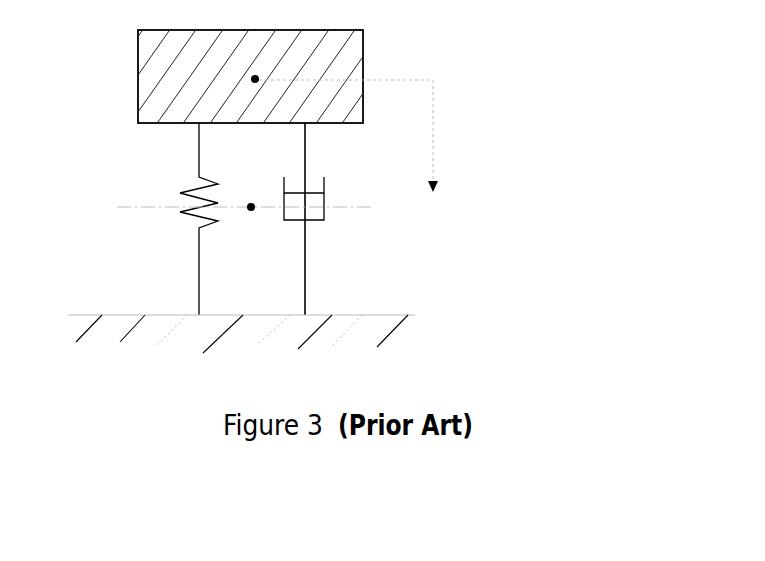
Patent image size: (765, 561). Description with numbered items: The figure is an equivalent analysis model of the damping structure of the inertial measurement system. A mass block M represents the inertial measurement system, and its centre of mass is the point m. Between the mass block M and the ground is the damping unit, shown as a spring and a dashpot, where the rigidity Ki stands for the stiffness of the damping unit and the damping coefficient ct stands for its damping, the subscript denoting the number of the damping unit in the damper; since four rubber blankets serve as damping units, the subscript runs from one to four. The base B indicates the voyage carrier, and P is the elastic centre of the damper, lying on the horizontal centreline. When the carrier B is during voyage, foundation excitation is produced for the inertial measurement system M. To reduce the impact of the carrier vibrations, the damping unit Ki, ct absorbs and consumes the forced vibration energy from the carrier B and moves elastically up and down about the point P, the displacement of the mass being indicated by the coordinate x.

The mass block M is at (243, 61).
The centre of mass m is at (245, 69).
The displacement direction x is at (350, 149).
The rigidity Ki is at (188, 219).
The damping coefficient ct is at (316, 219).
The elastic centre P is at (244, 221).
The voyage carrier B is at (241, 322).